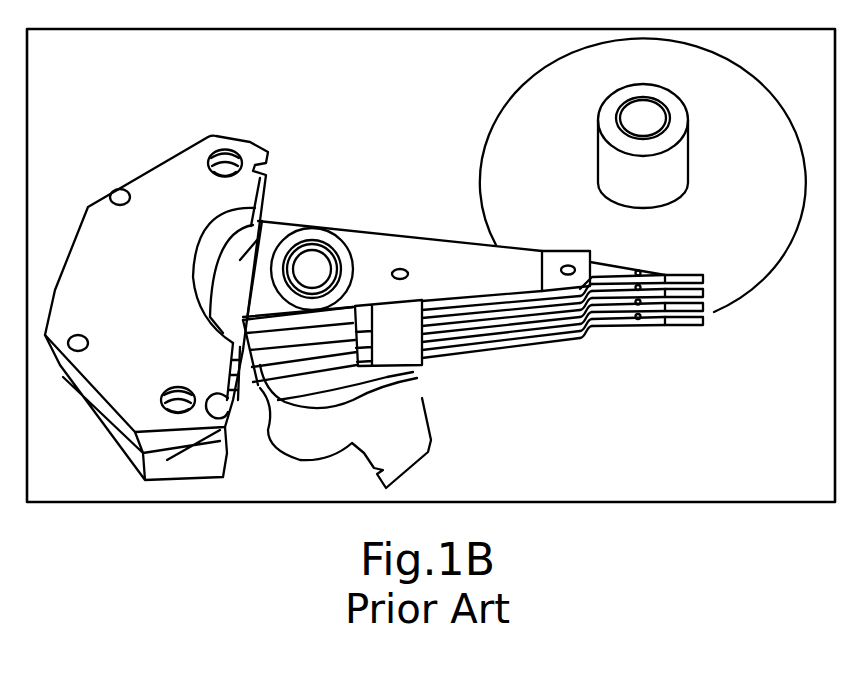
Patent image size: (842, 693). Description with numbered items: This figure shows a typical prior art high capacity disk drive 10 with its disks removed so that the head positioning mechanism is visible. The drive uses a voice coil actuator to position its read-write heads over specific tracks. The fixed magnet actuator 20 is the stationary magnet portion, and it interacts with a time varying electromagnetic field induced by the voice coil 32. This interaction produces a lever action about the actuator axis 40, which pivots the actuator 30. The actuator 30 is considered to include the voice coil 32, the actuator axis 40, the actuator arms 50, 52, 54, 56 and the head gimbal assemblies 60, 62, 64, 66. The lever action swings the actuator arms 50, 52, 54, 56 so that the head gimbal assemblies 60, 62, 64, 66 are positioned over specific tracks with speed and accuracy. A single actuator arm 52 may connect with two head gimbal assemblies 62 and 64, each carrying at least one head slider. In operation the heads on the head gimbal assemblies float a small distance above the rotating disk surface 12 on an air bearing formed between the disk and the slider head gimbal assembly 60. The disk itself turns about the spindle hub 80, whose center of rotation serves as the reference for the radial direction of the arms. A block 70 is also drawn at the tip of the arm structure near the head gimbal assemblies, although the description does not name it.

The disk drive 10 is at (339, 86).
The rotating disk surface 12 is at (728, 78).
The fixed magnet actuator 20 is at (167, 180).
The actuator 30 is at (558, 253).
The voice coil 32 is at (223, 282).
The actuator axis 40 is at (314, 267).
The actuator arm 50 is at (488, 262).
The actuator arm 52 is at (546, 312).
The actuator arm 54 is at (515, 332).
The actuator arm 56 is at (493, 340).
The slider head gimbal assembly 60 is at (677, 277).
The head gimbal assembly 62 is at (703, 287).
The head gimbal assembly 64 is at (692, 318).
The head gimbal assembly 66 is at (678, 326).
The arm tip block 70 is at (583, 251).
The spindle hub 80 is at (678, 162).